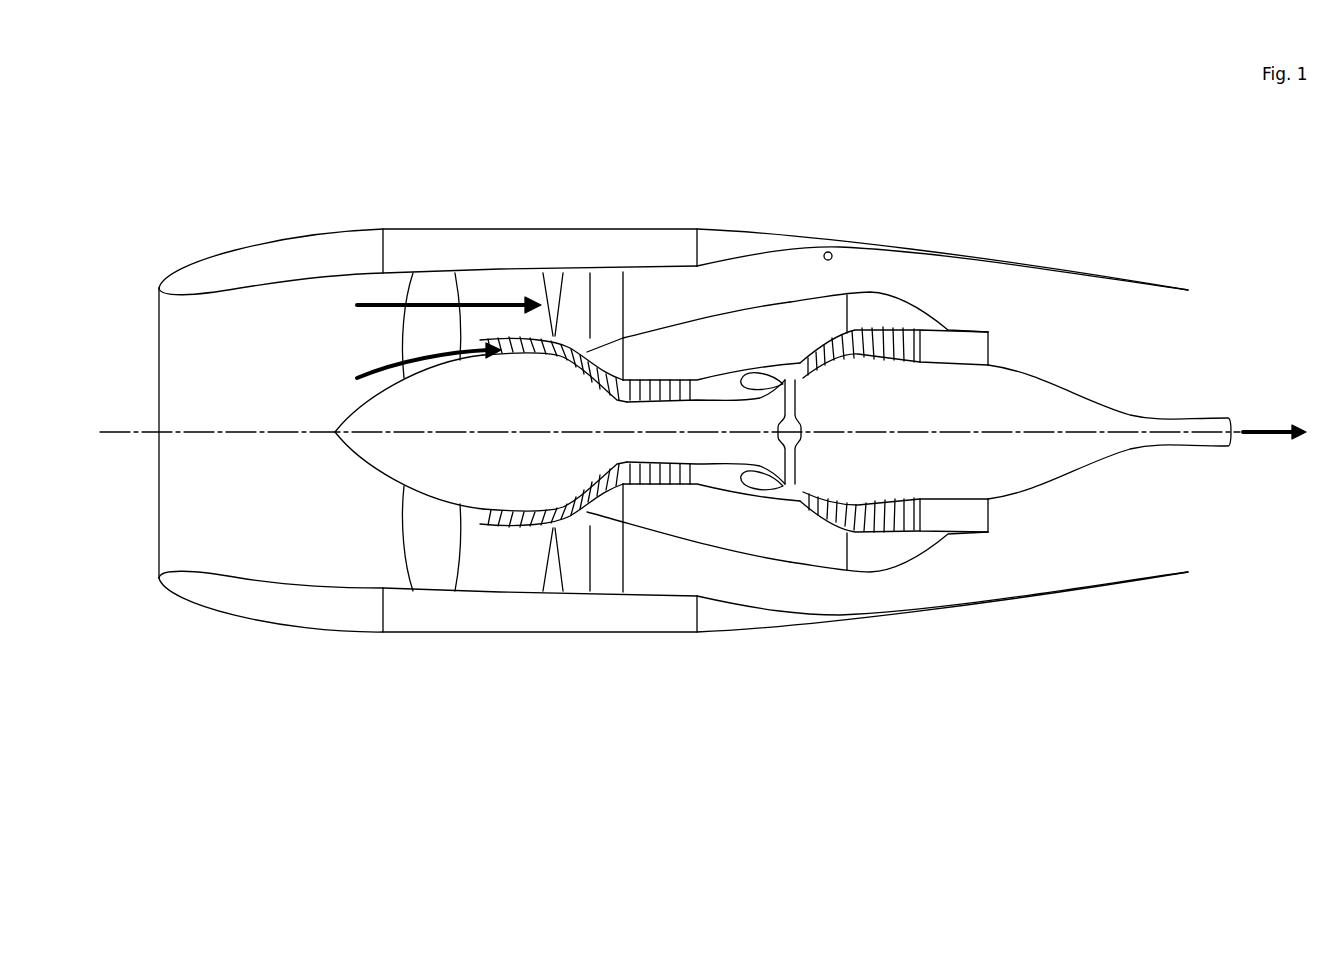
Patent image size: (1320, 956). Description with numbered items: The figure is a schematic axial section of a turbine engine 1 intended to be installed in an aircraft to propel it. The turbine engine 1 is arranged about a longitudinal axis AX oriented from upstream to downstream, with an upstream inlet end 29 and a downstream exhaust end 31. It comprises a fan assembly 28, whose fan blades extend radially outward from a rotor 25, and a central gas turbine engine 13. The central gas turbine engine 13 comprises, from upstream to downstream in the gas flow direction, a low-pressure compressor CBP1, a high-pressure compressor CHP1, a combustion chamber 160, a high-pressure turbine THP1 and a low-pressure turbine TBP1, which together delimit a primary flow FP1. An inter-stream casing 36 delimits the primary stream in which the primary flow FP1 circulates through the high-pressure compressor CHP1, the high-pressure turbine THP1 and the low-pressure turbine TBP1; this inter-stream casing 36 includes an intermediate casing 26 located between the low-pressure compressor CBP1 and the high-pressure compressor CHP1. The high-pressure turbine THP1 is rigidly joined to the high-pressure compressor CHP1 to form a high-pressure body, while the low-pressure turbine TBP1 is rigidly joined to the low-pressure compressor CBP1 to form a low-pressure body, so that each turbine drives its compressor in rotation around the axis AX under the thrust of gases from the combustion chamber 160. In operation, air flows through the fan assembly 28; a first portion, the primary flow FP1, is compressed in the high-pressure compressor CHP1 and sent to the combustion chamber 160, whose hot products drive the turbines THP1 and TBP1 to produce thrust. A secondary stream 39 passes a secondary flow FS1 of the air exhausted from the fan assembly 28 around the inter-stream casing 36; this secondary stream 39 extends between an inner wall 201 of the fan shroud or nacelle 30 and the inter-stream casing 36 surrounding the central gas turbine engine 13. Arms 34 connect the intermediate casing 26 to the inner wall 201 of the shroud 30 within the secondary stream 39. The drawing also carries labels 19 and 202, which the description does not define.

The turbine engine 1 is at (962, 516).
The central gas turbine engine 13 is at (938, 309).
The turbine casing 19 is at (878, 315).
The rotor 25 is at (435, 432).
The intermediate casing 26 is at (605, 352).
The fan assembly 28 is at (431, 432).
The upstream inlet end 29 is at (157, 497).
The fan shroud or nacelle 30 is at (405, 228).
The downstream exhaust end 31 is at (1131, 368).
The arms 34 is at (609, 432).
The inter-stream casing 36 is at (688, 432).
The secondary stream 39 is at (942, 431).
The combustion chamber 160 is at (753, 483).
The inner wall 201 is at (832, 252).
The intermediate casing 202 is at (638, 325).
The longitudinal axis AX is at (124, 430).
The secondary flow FS1 is at (372, 300).
The primary flow FP1 is at (372, 357).
The low-pressure compressor CBP1 is at (515, 517).
The high-pressure compressor CHP1 is at (688, 490).
The high-pressure turbine THP1 is at (812, 505).
The low-pressure turbine TBP1 is at (947, 533).